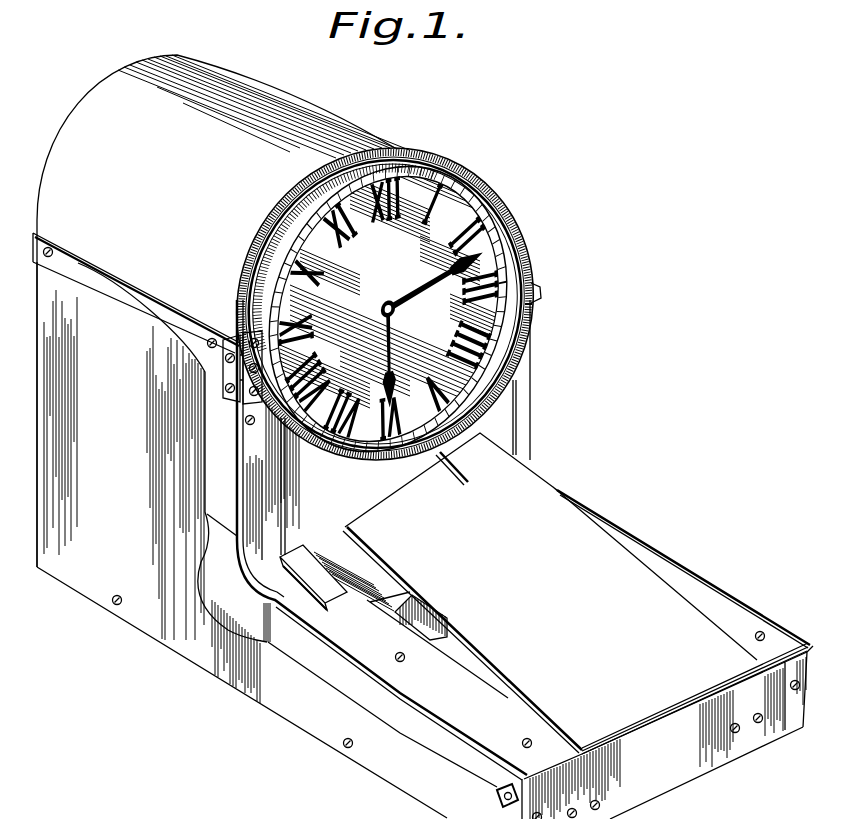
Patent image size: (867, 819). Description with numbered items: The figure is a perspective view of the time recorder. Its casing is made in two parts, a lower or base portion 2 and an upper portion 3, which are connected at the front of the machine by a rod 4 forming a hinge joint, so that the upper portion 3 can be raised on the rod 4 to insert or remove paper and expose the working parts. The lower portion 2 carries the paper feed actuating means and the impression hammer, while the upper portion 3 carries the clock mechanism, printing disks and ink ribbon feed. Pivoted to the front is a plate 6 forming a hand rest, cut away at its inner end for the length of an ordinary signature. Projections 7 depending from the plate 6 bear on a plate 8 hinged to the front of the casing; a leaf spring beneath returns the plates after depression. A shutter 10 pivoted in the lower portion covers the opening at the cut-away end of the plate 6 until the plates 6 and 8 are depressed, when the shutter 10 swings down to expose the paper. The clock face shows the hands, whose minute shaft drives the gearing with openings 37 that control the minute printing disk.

The lower or base portion 2 is at (152, 482).
The upper portion 3 is at (221, 311).
The rod 4 is at (425, 693).
The plate 6 is at (576, 593).
The projections 7 is at (393, 461).
The plate 8 is at (460, 652).
The shutter 10 is at (337, 577).
The openings 37 is at (396, 312).